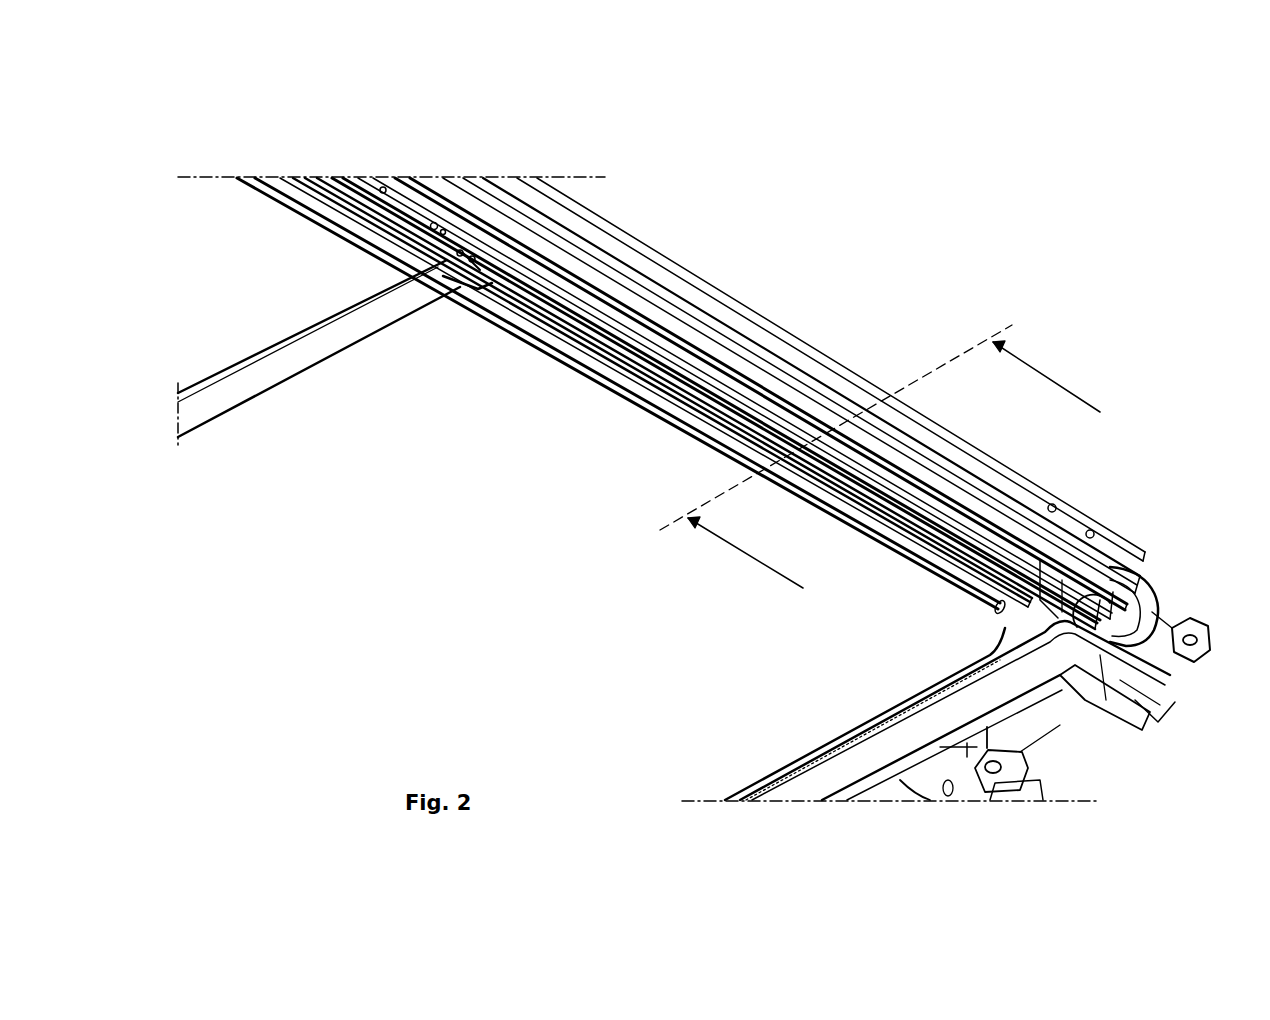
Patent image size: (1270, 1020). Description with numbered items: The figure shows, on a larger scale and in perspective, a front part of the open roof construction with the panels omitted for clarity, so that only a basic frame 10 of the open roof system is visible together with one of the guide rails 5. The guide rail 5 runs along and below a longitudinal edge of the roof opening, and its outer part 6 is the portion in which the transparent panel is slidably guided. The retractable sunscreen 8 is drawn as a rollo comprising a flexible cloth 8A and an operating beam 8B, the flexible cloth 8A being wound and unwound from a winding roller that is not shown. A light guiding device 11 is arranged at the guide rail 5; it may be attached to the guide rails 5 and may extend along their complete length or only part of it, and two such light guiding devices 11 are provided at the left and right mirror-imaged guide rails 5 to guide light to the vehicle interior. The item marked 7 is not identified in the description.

The guide rail 5 is at (662, 279).
The outer part of guide rail 6 is at (720, 340).
The roof frame 7 is at (241, 167).
The retractable sunscreen 8 is at (423, 225).
The flexible cloth 8A is at (310, 257).
The operating beam 8B is at (570, 250).
The basic frame 10 is at (1150, 577).
The light guiding device 11 is at (733, 440).